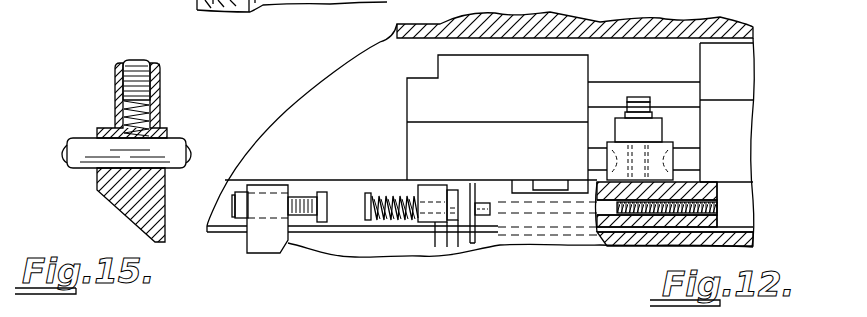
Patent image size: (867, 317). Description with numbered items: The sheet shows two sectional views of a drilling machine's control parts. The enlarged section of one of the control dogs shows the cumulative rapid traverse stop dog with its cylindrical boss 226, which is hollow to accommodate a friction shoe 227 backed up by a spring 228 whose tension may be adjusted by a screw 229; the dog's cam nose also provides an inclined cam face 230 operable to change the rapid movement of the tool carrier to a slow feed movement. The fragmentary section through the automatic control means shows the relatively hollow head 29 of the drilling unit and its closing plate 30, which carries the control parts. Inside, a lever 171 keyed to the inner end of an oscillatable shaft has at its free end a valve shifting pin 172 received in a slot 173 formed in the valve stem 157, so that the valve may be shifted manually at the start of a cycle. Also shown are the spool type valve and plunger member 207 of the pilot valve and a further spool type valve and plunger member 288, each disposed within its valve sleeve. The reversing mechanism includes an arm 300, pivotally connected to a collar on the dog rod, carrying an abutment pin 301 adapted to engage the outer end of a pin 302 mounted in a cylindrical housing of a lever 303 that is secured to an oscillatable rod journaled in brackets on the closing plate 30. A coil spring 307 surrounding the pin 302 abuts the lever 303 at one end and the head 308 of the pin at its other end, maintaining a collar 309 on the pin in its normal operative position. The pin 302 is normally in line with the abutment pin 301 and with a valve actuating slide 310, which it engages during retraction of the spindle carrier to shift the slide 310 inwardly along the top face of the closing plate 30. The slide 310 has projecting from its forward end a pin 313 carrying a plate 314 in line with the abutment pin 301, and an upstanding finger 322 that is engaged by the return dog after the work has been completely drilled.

In FIG. 15, the cylindrical boss 226 is at (155, 108).
In FIG. 15, the friction shoe 227 is at (163, 128).
In FIG. 15, the spring 228 is at (138, 118).
In FIG. 15, the screw 229 is at (145, 64).
In FIG. 15, the inclined cam face 230 is at (135, 229).
In FIG. 12, the slot 173 is at (312, 0).
In FIG. 12, the head 29 is at (690, 28).
In FIG. 12, the stem 157 is at (612, 93).
In FIG. 12, the valve shifting pin 172 is at (645, 97).
In FIG. 12, the lever 171 is at (648, 132).
In FIG. 12, the spool type valve and plunger member 207 is at (598, 155).
In FIG. 12, the finger 322 is at (560, 187).
In FIG. 12, the valve actuating slide 310 is at (525, 185).
In FIG. 12, the spool type valve and plunger member 288 is at (685, 157).
In FIG. 12, the closing plate 30 is at (740, 205).
In FIG. 12, the arm 300 is at (270, 247).
In FIG. 12, the abutment pin 301 is at (308, 193).
In FIG. 12, the pin 302 is at (372, 193).
In FIG. 12, the lever 303 is at (467, 153).
In FIG. 12, the coil spring 307 is at (392, 222).
In FIG. 12, the head 308 is at (370, 217).
In FIG. 12, the collar 309 is at (455, 193).
In FIG. 12, the pin 313 is at (487, 216).
In FIG. 12, the plate 314 is at (472, 247).